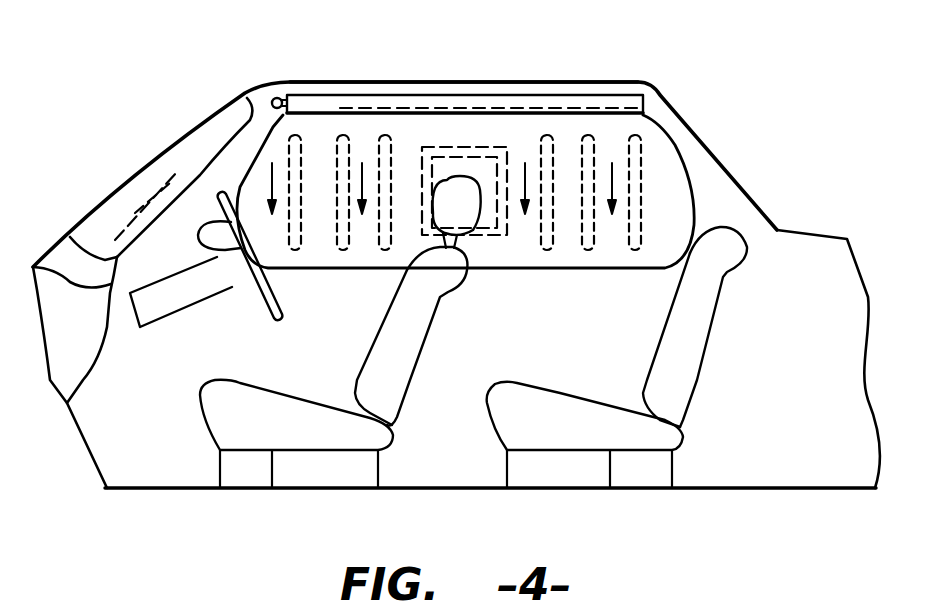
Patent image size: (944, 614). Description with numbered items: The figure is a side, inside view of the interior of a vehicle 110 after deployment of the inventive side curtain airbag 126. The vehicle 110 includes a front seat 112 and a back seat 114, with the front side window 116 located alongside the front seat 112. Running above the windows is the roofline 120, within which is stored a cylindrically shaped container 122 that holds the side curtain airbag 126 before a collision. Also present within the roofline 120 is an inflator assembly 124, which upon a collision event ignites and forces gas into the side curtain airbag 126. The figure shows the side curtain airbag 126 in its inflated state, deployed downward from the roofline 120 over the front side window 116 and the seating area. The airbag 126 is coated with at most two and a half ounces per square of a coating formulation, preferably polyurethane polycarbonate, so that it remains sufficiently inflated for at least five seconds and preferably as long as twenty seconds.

The vehicle 110 is at (140, 100).
The front seat 112 is at (272, 488).
The back seat 114 is at (610, 488).
The front side window 116 is at (212, 218).
The roofline 120 is at (422, 80).
The cylindrically shaped container 122 is at (312, 95).
The inflator assembly 124 is at (272, 98).
The side curtain airbag 126 is at (680, 148).